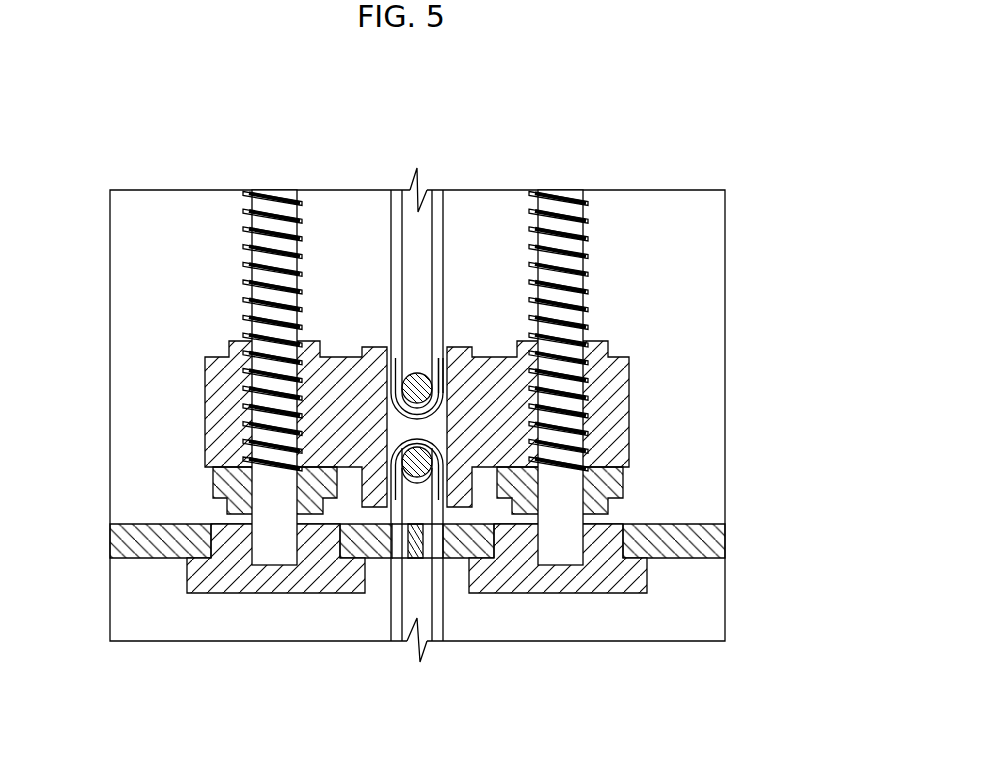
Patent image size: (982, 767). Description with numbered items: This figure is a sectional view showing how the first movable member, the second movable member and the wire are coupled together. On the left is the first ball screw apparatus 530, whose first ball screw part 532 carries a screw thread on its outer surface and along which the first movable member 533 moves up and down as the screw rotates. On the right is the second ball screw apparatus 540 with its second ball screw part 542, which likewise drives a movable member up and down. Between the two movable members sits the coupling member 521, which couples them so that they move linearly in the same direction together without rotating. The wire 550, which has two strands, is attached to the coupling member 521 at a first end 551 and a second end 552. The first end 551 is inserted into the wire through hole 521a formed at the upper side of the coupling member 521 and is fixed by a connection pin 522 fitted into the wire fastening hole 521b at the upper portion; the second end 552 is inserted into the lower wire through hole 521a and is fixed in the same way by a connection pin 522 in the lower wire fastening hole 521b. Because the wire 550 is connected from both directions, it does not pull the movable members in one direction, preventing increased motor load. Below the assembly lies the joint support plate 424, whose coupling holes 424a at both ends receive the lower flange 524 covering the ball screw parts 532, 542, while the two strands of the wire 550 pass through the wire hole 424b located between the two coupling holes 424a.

The joint support plate 424 is at (115, 535).
The coupling hole 424a is at (320, 543).
The wire hole 424b is at (442, 550).
The coupling member 521 is at (405, 501).
The wire through hole 521a is at (418, 373).
The wire fastening hole 521b is at (404, 372).
The connection pin 522 is at (376, 334).
The lower flange 524 is at (273, 593).
The first ball screw apparatus 530 is at (236, 347).
The first ball screw part 532 is at (247, 213).
The first movable member 533 is at (220, 421).
The second ball screw apparatus 540 is at (598, 346).
The second ball screw part 542 is at (586, 213).
The wire 550 is at (450, 211).
The first end 551 is at (446, 357).
The second end 552 is at (408, 428).